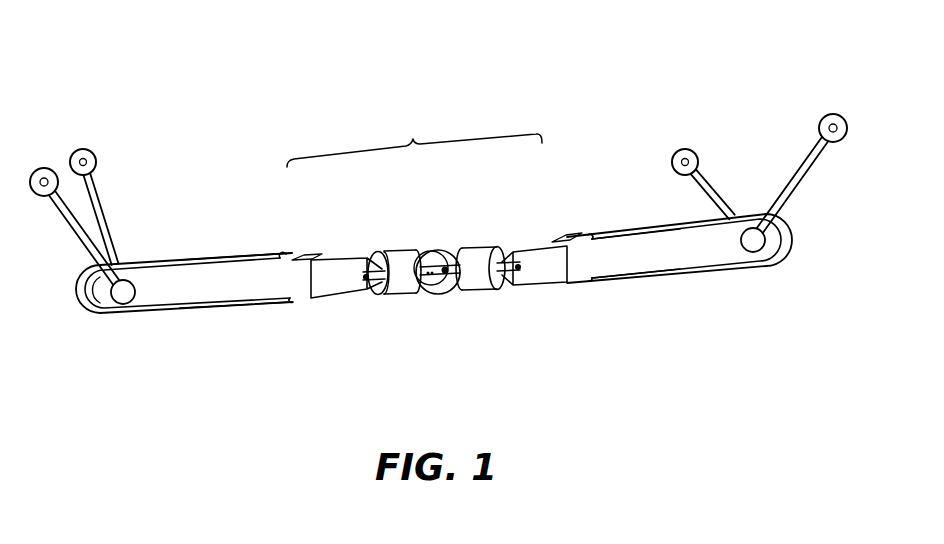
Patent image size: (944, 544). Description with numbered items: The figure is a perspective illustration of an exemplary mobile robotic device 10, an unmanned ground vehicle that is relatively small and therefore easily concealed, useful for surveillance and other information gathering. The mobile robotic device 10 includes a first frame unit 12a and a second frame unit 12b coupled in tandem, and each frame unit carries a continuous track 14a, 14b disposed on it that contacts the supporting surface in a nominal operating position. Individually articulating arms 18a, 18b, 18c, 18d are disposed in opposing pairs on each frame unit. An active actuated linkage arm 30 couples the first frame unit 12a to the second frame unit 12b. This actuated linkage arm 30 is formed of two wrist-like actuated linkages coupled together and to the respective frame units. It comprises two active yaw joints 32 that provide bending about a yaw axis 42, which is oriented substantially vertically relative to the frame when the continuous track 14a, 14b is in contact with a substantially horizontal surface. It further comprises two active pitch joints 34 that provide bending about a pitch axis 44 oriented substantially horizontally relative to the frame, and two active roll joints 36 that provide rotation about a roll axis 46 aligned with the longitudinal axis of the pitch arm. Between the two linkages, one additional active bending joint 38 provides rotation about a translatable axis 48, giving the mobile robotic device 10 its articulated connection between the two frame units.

The mobile robotic device 10 is at (126, 42).
The first frame unit 12a is at (220, 297).
The second frame unit 12b is at (680, 253).
The continuous track 14a is at (263, 313).
The continuous track 14b is at (655, 277).
The articulating arm 18a is at (95, 190).
The articulating arm 18b is at (63, 218).
The articulating arm 18c is at (813, 147).
The articulating arm 18d is at (713, 195).
The actuated linkage arm 30 is at (414, 141).
The yaw joint 32 is at (320, 309).
The pitch joint 34 is at (367, 309).
The roll joint 36 is at (390, 309).
The active bending joint 38 is at (425, 306).
The yaw axis 42 is at (312, 256).
The pitch axis 44 is at (364, 273).
The roll axis 46 is at (388, 252).
The translatable axis 48 is at (446, 266).